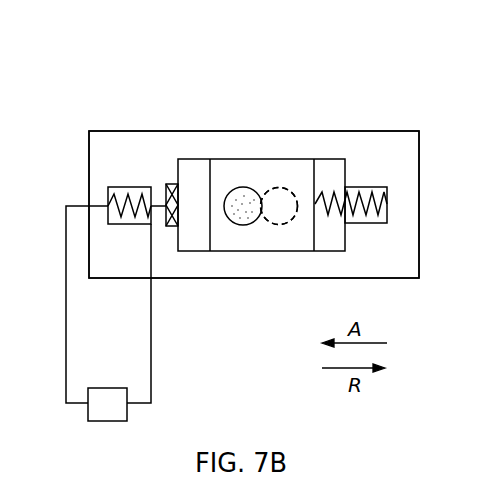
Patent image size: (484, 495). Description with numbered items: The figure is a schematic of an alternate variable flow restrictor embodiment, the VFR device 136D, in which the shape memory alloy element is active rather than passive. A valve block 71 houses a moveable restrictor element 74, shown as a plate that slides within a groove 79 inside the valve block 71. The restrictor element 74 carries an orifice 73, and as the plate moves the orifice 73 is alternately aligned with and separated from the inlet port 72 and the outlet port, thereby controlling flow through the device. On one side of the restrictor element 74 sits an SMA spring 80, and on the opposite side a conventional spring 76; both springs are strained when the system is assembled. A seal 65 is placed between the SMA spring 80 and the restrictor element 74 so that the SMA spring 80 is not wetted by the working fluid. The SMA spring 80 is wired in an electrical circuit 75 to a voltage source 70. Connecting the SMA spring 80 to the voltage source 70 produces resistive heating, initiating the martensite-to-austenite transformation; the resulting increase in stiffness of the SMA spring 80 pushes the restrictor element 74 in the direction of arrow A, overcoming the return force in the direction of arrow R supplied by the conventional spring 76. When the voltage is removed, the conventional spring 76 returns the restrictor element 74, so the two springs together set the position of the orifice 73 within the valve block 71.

The VFR device 136D is at (383, 83).
The valve block 71 is at (398, 142).
The SMA spring 80 is at (130, 187).
The seal 65 is at (166, 184).
The groove 79 is at (247, 245).
The orifice 73 is at (243, 187).
The restrictor element 74 is at (273, 172).
The inlet port 72 is at (272, 223).
The conventional spring 76 is at (375, 214).
The electrical circuit 75 is at (63, 325).
The voltage source 70 is at (100, 388).